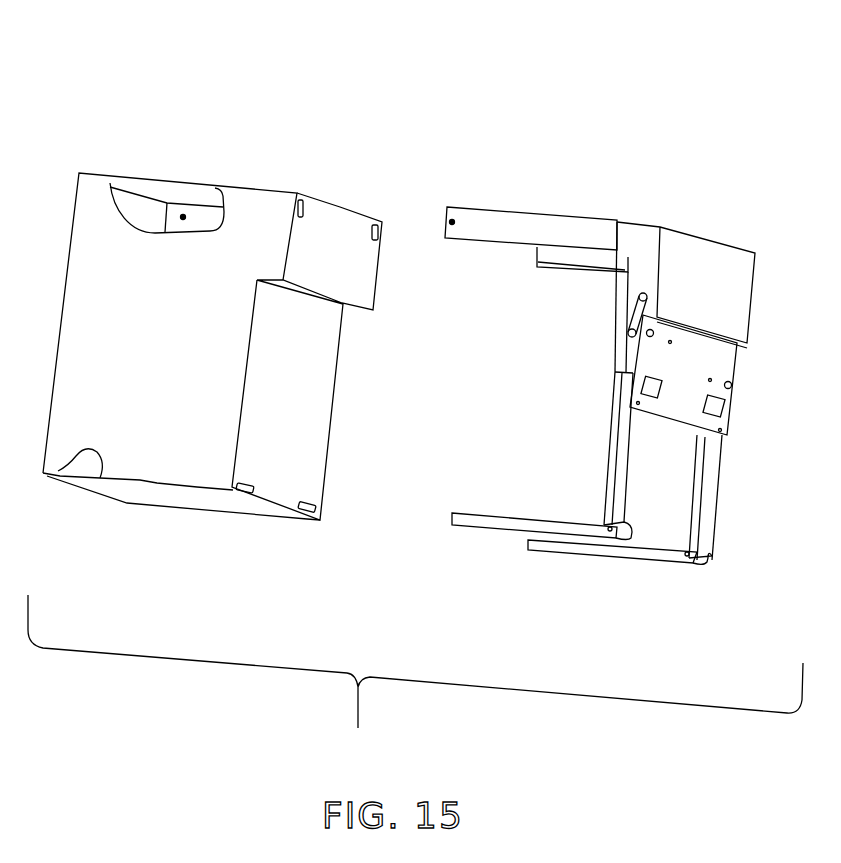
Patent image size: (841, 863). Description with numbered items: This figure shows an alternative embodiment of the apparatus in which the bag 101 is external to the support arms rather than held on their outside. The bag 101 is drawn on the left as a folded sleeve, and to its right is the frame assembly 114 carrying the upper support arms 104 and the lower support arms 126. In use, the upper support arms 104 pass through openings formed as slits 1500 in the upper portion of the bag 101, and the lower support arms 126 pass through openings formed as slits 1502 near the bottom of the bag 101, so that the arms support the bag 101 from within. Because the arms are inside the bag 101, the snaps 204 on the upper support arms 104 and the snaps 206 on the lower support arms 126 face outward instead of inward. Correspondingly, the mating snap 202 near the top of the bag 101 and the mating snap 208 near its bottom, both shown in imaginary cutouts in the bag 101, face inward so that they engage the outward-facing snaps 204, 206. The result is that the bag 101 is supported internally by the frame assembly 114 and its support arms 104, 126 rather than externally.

The bag 101 is at (212, 315).
The mating snap 202 is at (173, 180).
The slit 1500 is at (458, 128).
The slit 1502 is at (283, 560).
The mating snap 208 is at (112, 530).
The frame assembly 114 is at (686, 274).
The upper support arm 104 is at (539, 244).
The snap 204 is at (436, 250).
The snap 206 is at (543, 552).
The lower support arm 126 is at (537, 525).